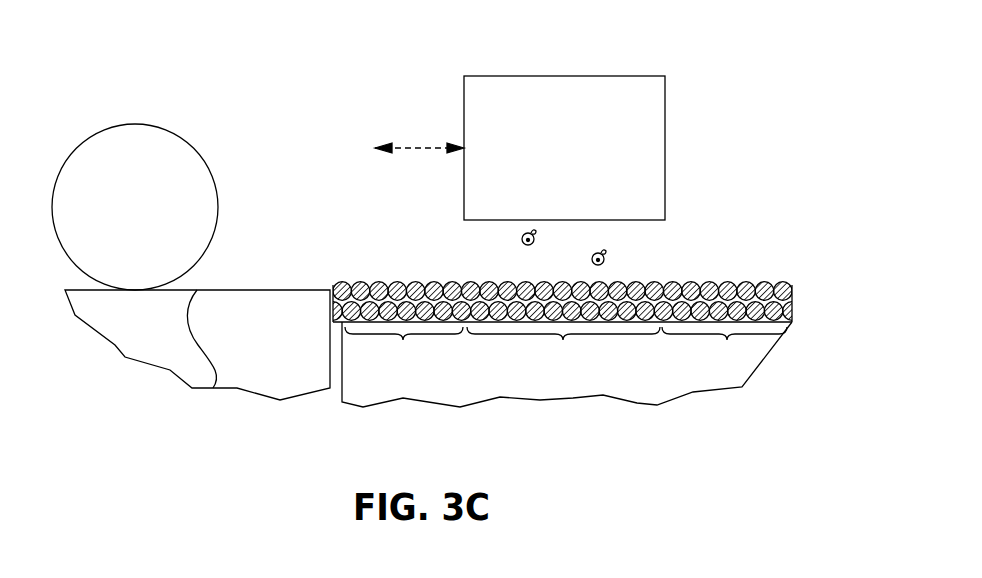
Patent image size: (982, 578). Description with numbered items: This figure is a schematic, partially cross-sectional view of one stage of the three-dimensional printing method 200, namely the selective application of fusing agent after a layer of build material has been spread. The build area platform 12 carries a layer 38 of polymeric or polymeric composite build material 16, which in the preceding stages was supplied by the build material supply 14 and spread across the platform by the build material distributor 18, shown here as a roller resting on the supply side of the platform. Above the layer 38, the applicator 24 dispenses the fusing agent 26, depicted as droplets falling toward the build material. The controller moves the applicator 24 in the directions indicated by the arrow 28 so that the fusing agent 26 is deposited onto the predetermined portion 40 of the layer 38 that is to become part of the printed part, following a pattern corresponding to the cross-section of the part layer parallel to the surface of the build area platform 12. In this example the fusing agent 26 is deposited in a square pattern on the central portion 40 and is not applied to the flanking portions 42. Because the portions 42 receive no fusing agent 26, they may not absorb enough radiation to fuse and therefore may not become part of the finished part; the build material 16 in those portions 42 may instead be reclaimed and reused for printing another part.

The 3D printing method 200 is at (190, 101).
The build material distributor 18 is at (216, 178).
The build material supply 14 is at (213, 388).
The build area platform 12 is at (638, 372).
The polymeric or polymeric composite build material 16 is at (792, 285).
The portions 42 is at (566, 350).
The portion 40 is at (563, 350).
The applicator 24 is at (563, 76).
The arrow 28 is at (410, 148).
The layer 38 is at (440, 282).
The fusing agent 26 is at (591, 256).